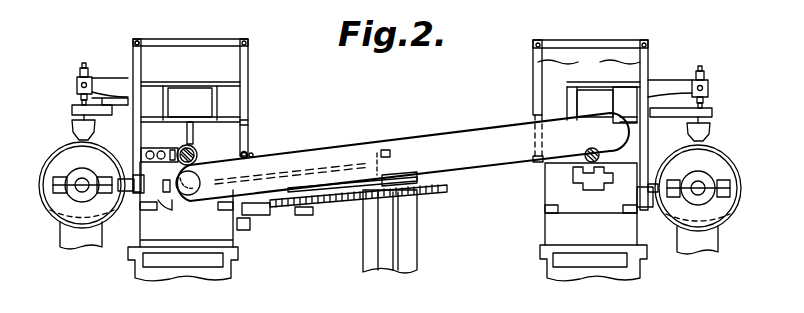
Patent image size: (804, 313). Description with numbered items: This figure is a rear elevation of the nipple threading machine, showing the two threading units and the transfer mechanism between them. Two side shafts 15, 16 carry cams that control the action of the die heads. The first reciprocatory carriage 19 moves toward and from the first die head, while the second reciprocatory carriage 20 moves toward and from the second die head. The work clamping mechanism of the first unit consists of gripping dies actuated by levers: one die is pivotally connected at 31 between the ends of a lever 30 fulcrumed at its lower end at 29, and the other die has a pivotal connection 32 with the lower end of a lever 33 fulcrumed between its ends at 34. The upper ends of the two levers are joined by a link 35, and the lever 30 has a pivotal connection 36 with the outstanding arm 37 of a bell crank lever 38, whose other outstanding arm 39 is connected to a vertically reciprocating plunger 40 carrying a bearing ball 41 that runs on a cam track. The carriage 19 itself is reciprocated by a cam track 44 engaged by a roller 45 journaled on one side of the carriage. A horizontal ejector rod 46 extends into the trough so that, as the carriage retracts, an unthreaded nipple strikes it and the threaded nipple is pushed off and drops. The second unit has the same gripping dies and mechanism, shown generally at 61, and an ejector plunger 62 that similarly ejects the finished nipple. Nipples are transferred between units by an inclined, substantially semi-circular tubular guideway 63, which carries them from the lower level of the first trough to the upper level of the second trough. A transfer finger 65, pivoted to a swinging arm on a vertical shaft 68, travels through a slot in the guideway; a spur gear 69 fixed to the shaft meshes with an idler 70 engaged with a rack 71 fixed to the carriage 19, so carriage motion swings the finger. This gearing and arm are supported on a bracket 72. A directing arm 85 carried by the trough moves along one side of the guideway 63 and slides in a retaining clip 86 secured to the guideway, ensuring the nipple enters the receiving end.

The side shaft 15 is at (80, 186).
The side shaft 16 is at (700, 186).
The reciprocatory carriage 19 is at (158, 208).
The second reciprocatory carriage 20 is at (547, 190).
The fulcrum 29 is at (132, 148).
The lever 30 is at (140, 55).
The pivotal connection 31 is at (122, 173).
The pivotal connection 32 is at (248, 153).
The lever 33 is at (248, 77).
The fulcrum 34 is at (246, 124).
The link 35 is at (192, 40).
The pivotal connection 36 is at (138, 41).
The outstanding arm 37 is at (133, 48).
The bell crank lever 38 is at (128, 80).
The outstanding arm 39 is at (97, 83).
The plunger 40 is at (80, 92).
The bearing ball 41 is at (72, 135).
The cam track 44 is at (40, 178).
The roller 45 is at (127, 187).
The ejector 46 is at (197, 157).
The gripping die mechanism 61 is at (602, 44).
The ejector plunger 62 is at (600, 155).
The tubular guideway 63 is at (470, 131).
The transfer finger 65 is at (305, 166).
The vertical shaft 68 is at (387, 149).
The spur gear 69 is at (440, 193).
The idler 70 is at (290, 207).
The rack 71 is at (257, 214).
The bracket 72 is at (393, 234).
The directing arm 85 is at (151, 179).
The retaining clip 86 is at (172, 200).